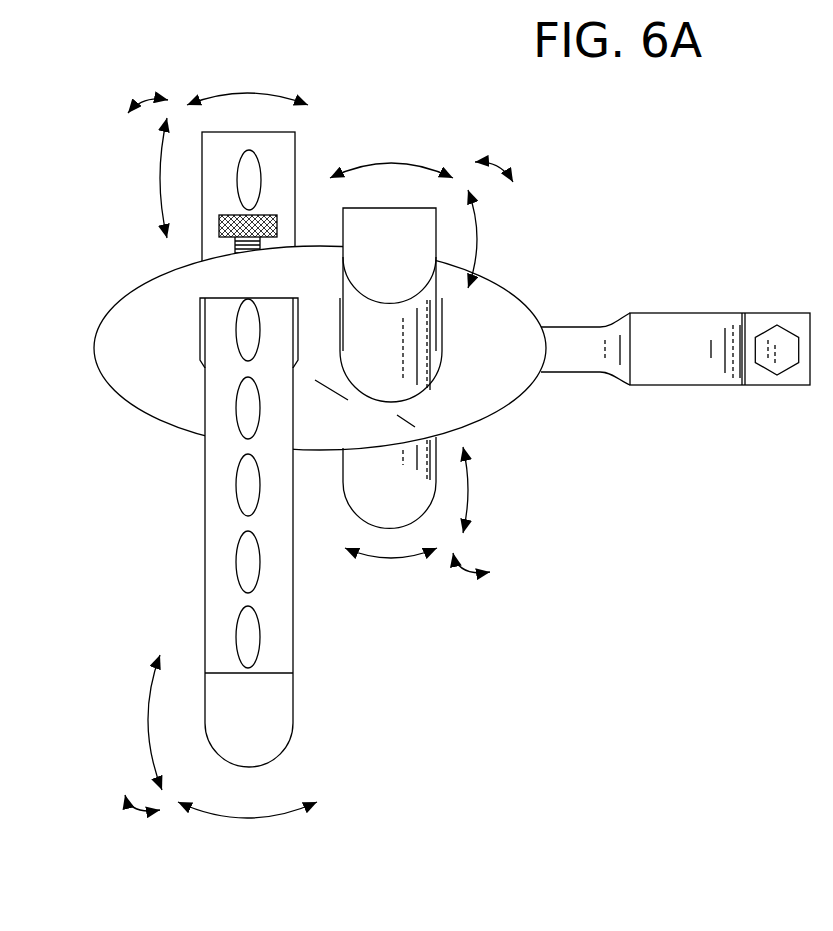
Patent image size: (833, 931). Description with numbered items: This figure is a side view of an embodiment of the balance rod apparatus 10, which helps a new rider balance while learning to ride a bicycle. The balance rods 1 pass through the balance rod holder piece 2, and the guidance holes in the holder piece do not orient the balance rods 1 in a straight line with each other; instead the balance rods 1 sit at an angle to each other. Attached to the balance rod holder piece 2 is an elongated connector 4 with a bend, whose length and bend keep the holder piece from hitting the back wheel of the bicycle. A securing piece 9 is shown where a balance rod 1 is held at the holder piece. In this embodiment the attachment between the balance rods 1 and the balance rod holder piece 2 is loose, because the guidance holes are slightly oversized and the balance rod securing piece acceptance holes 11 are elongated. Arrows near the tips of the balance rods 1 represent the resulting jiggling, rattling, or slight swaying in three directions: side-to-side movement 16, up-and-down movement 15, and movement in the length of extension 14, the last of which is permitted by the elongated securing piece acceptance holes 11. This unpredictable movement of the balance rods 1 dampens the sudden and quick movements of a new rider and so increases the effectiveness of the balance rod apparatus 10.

The balance rod 1 is at (332, 449).
The balance rod holder piece 2 is at (517, 300).
The elongated connector 4 is at (680, 313).
The thumb screw 9 is at (219, 224).
The balance rod apparatus 10 is at (597, 495).
The balance rod securing piece acceptance hole 11 is at (245, 623).
The movement in the length of extension 14 is at (148, 700).
The up-and-down movement 15 is at (140, 812).
The side-to-side movement 16 is at (240, 818).